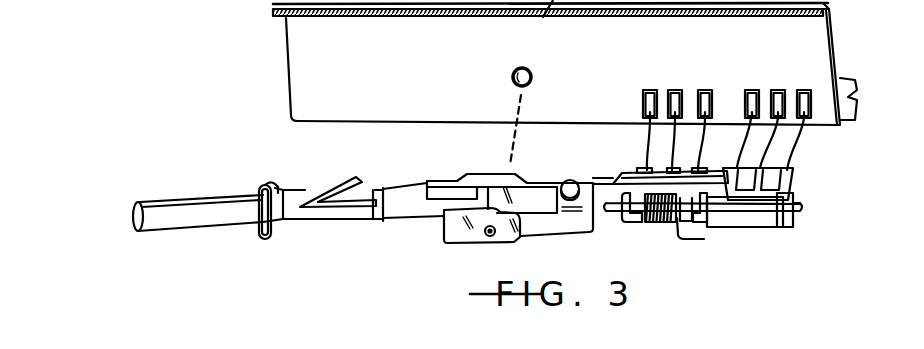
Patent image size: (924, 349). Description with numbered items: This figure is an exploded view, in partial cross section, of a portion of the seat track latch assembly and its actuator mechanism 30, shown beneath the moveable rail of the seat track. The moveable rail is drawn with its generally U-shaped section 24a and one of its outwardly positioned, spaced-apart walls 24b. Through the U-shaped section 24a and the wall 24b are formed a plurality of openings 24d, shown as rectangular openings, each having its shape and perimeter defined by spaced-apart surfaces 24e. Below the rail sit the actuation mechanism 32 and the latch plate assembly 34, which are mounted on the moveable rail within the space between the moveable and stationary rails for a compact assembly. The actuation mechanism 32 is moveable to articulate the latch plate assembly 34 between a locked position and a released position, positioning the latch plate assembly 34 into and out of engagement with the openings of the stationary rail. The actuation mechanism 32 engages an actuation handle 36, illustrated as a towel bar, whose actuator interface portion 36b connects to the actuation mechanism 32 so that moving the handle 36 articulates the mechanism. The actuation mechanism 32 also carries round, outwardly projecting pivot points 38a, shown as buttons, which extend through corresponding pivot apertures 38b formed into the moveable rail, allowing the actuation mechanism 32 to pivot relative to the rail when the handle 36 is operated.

The U-shaped section 24a is at (798, 58).
The spaced-apart wall 24b is at (858, 95).
The openings 24d is at (811, 83).
The spaced-apart surfaces 24e is at (747, 92).
The connector 30 is at (472, 185).
The actuation mechanism 32 is at (530, 174).
The latch plate assembly 34 is at (733, 242).
The actuation handle 36 is at (180, 202).
The actuator interface portion 36b is at (395, 207).
The pivot points 38a is at (490, 237).
The pivot apertures 38b is at (513, 86).